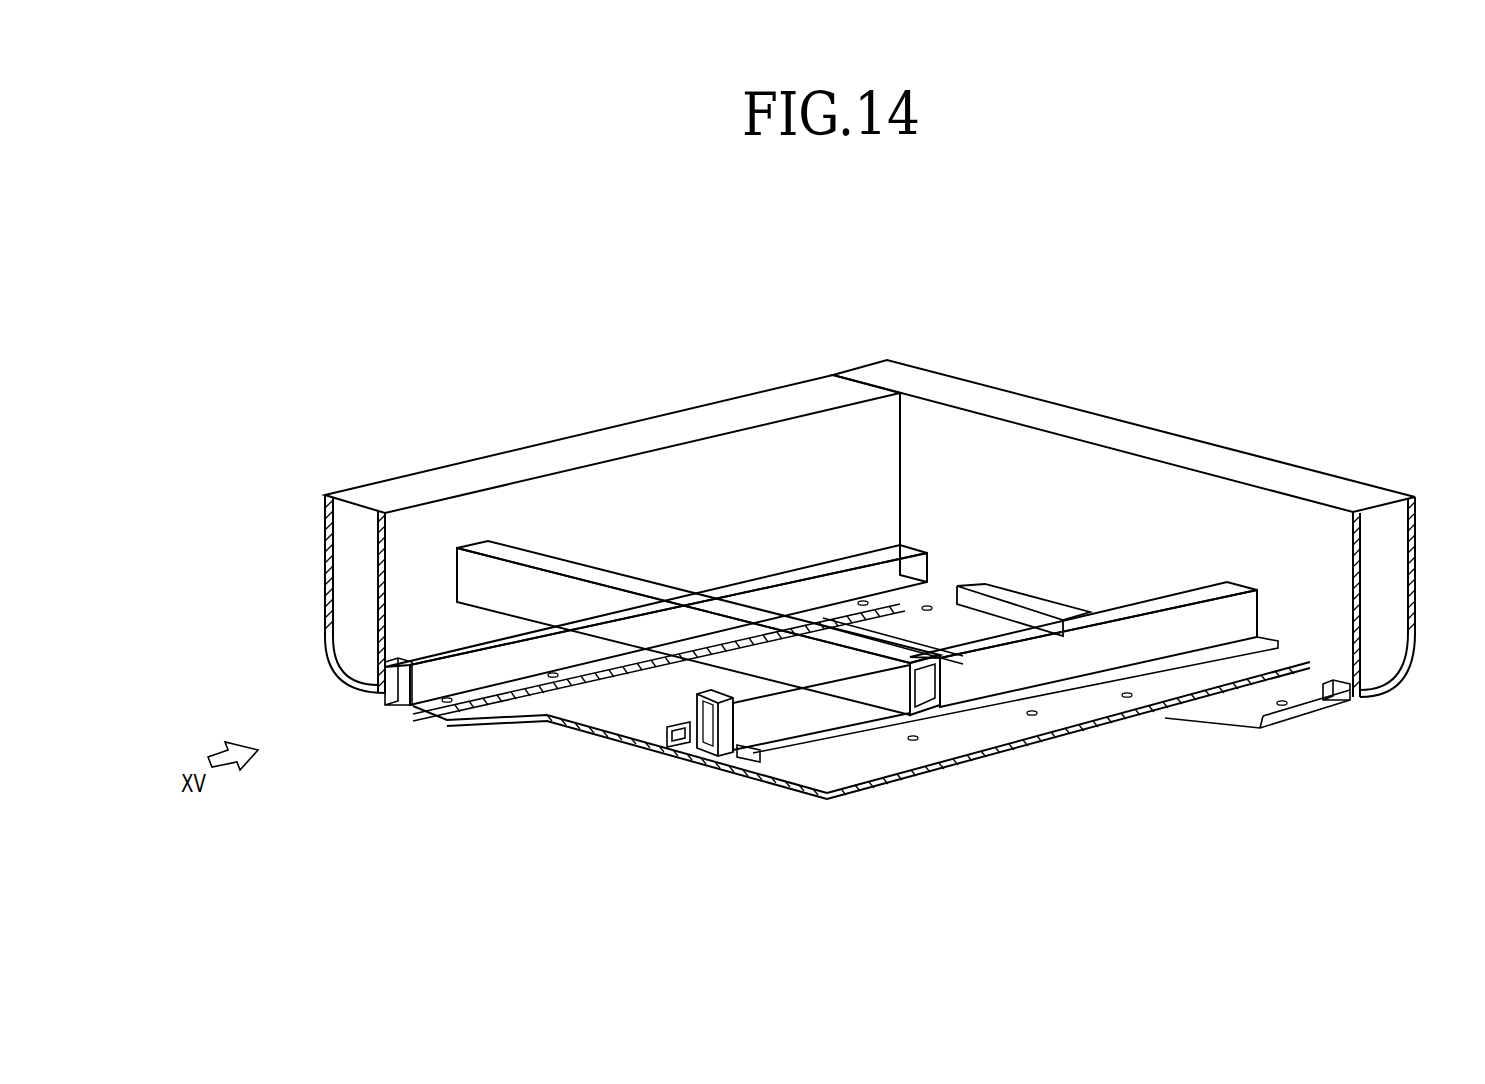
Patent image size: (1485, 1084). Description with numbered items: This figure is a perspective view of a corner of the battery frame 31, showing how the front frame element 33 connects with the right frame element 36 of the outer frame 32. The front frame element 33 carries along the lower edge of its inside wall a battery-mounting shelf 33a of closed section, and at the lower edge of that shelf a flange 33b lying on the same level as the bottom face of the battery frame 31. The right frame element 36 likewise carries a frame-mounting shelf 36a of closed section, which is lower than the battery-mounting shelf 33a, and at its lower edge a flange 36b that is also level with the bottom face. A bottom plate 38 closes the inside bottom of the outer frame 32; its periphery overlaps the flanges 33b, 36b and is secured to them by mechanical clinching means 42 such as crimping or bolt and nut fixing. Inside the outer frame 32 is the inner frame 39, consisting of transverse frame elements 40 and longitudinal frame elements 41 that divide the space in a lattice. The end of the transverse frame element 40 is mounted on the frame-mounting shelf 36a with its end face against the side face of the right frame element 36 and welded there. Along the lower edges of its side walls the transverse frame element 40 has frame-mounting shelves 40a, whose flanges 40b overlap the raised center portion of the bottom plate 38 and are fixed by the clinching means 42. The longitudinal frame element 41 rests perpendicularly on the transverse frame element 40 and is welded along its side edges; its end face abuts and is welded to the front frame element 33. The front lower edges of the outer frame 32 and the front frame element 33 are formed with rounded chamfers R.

The battery frame 31 is at (668, 408).
The outer frame 32 is at (970, 382).
The front frame element 33 is at (516, 468).
The battery-mounting shelf 33a is at (416, 706).
The flange 33b is at (483, 692).
The right frame element 36 is at (1127, 437).
The frame-mounting shelf 36a is at (1367, 684).
The flange 36b is at (1240, 692).
The bottom plate 38 is at (567, 724).
The inner frame 39 is at (1097, 609).
The transverse frame element 40 is at (1192, 600).
The frame-mounting shelf 40a is at (665, 745).
The flange 40b is at (627, 737).
The longitudinal frame element 41 is at (622, 580).
The mechanical clinching means 42 is at (927, 604).
The rounded chamfer R is at (337, 678).